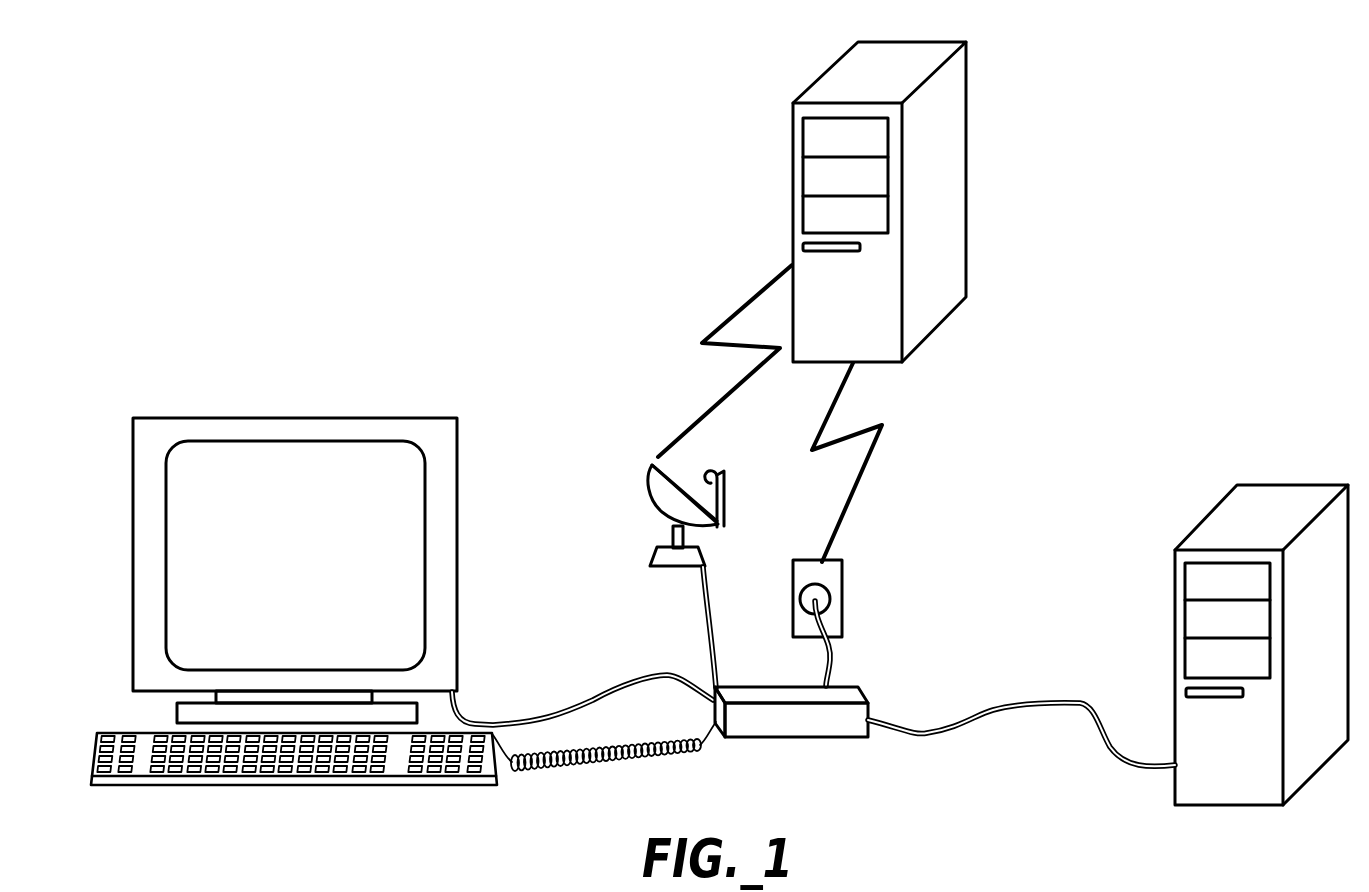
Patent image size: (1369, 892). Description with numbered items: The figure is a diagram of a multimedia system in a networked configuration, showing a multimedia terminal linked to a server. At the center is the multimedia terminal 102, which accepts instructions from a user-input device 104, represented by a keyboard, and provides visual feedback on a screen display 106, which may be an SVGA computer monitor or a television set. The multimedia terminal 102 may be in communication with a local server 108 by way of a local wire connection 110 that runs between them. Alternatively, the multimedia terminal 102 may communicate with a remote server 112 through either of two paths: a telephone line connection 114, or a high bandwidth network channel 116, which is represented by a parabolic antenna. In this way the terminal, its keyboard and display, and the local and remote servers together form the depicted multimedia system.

The multimedia terminal 102 is at (848, 686).
The user-input device 104 is at (130, 729).
The screen display 106 is at (457, 495).
The local server 108 is at (1173, 630).
The local wire connection 110 is at (1003, 707).
The remote server 112 is at (966, 168).
The telephone line connection 114 is at (842, 580).
The high bandwidth network channel 116 is at (650, 557).